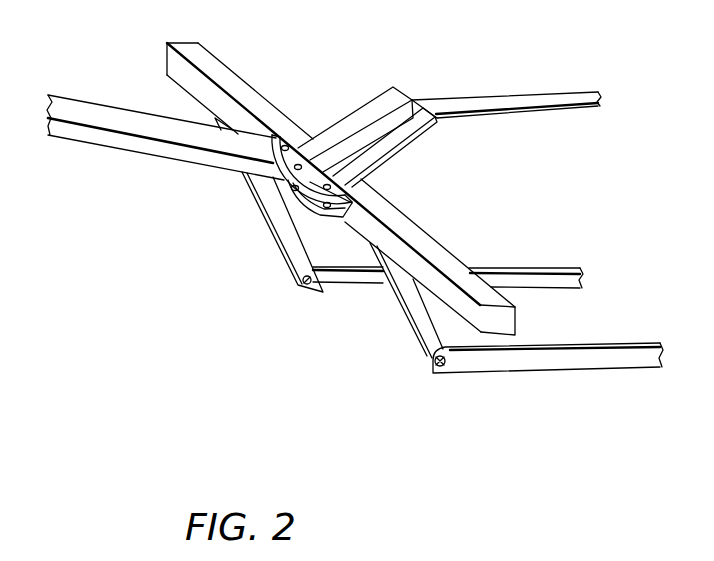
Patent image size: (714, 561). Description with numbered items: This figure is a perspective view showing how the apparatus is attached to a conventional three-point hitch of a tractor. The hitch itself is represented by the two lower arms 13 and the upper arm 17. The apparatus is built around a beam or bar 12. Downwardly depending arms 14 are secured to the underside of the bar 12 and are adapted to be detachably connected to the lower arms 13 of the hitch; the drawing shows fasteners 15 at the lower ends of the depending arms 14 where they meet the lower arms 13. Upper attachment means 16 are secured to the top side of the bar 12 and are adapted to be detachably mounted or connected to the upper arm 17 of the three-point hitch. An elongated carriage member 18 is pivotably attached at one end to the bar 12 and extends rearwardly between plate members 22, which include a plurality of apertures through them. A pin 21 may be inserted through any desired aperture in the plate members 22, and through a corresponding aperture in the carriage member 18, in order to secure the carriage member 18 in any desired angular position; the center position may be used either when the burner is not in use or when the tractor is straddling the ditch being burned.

The beam or bar 12 is at (222, 68).
The lower arms 13 is at (525, 278).
The downwardly depending arms 14 is at (284, 235).
The rivet 15 is at (297, 288).
The upper attachment means 16 is at (397, 87).
The upper arm 17 is at (532, 97).
The elongated carriage member 18 is at (145, 149).
The pin 21 is at (275, 137).
The plate members 22 is at (306, 200).